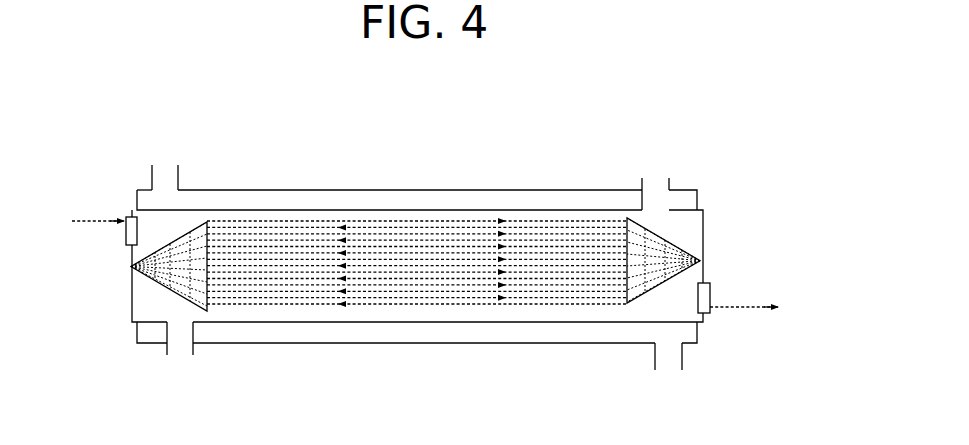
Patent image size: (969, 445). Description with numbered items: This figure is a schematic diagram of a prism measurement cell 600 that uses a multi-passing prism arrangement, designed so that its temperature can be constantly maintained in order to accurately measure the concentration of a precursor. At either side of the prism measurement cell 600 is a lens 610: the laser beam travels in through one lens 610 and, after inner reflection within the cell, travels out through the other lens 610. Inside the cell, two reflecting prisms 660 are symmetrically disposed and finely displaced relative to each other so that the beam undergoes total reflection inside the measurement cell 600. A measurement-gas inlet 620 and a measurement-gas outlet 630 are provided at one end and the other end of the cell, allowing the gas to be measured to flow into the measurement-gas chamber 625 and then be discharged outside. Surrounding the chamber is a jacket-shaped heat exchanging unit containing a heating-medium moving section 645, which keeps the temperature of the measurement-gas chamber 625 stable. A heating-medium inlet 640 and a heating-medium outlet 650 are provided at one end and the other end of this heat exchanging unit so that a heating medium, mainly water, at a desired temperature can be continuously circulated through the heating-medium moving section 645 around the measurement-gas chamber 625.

The prism measurement cell 600 is at (417, 203).
The lens 610 is at (118, 238).
The measurement-gas inlet 620 is at (654, 181).
The measurement-gas chamber 625 is at (417, 262).
The measurement-gas outlet 630 is at (182, 347).
The heating-medium inlet 640 is at (670, 356).
The heating-medium moving section 645 is at (406, 202).
The heating-medium outlet 650 is at (167, 168).
The reflecting prism 660 is at (150, 286).